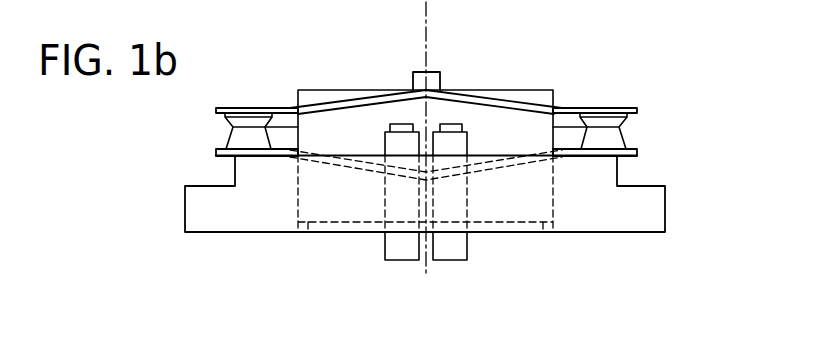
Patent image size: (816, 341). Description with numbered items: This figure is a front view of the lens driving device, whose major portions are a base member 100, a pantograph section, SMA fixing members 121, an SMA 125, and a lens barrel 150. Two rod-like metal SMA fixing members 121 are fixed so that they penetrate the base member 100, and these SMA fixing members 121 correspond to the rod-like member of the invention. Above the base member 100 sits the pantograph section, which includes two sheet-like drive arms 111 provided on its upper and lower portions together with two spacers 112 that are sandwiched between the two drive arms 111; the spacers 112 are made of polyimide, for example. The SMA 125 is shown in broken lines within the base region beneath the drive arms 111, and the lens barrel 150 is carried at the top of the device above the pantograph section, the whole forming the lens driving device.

The base member 100 is at (666, 211).
The drive arm 111 is at (512, 110).
The spacer 112 is at (230, 137).
The SMA fixing member 121 is at (402, 260).
The SMA 125 is at (548, 158).
The lens barrel 150 is at (553, 92).